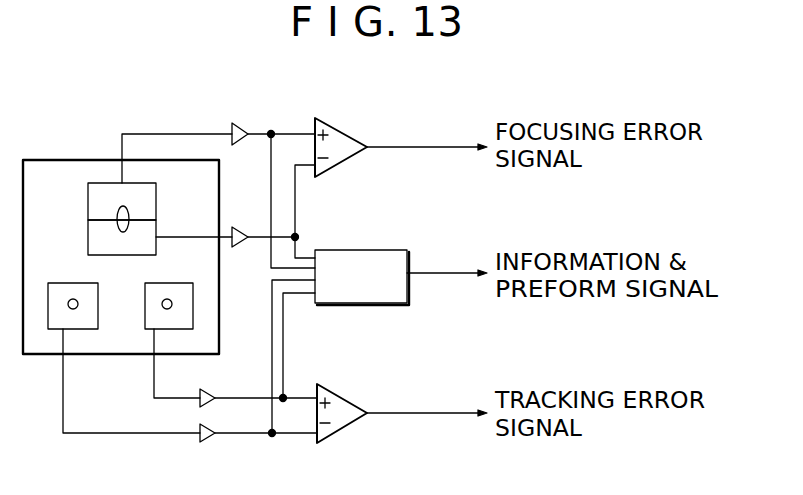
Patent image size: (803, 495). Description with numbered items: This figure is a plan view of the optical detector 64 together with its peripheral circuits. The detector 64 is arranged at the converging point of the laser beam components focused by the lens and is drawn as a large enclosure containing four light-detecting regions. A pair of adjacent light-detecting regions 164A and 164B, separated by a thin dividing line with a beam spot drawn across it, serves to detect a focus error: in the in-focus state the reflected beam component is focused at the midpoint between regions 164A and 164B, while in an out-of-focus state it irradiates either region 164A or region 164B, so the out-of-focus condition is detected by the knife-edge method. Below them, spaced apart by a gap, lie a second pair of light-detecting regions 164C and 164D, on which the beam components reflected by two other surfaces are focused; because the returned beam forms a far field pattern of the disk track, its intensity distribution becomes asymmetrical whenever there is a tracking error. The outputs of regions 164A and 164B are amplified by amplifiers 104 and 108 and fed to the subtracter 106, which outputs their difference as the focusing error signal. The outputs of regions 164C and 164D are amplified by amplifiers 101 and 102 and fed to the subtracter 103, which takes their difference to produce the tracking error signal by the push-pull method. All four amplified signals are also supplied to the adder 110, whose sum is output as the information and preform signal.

The detector 64 is at (200, 197).
The light-detecting region 164A is at (107, 190).
The light-detecting region 164B is at (98, 238).
The light-detecting region 164C is at (89, 322).
The light-detecting region 164D is at (183, 317).
The amplifier 104 is at (240, 125).
The amplifier 108 is at (240, 243).
The amplifier 101 is at (200, 403).
The amplifier 102 is at (202, 442).
The subtracter 106 is at (342, 124).
The subtracter 103 is at (342, 395).
The adder 110 is at (358, 250).